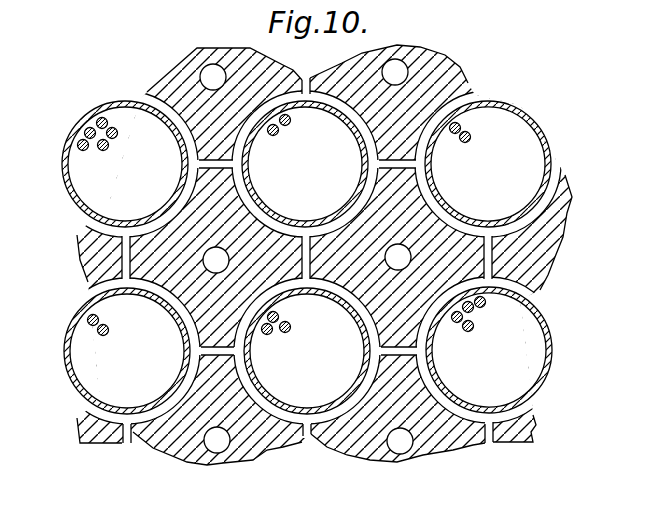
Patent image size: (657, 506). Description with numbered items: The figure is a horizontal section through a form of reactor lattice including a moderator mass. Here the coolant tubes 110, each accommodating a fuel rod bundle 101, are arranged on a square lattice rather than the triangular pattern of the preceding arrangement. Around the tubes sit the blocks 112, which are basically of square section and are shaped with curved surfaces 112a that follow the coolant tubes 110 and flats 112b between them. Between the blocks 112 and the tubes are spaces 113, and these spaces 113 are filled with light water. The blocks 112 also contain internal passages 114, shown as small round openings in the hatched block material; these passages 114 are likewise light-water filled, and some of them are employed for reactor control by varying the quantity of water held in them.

The fuel rod bundles 101 is at (82, 128).
The coolant tubes 110 is at (319, 104).
The blocks 112 is at (183, 76).
The curved surfaces 112a is at (530, 223).
The flats 112b is at (397, 357).
The spaces 113 is at (127, 445).
The internal passages 114 is at (212, 448).